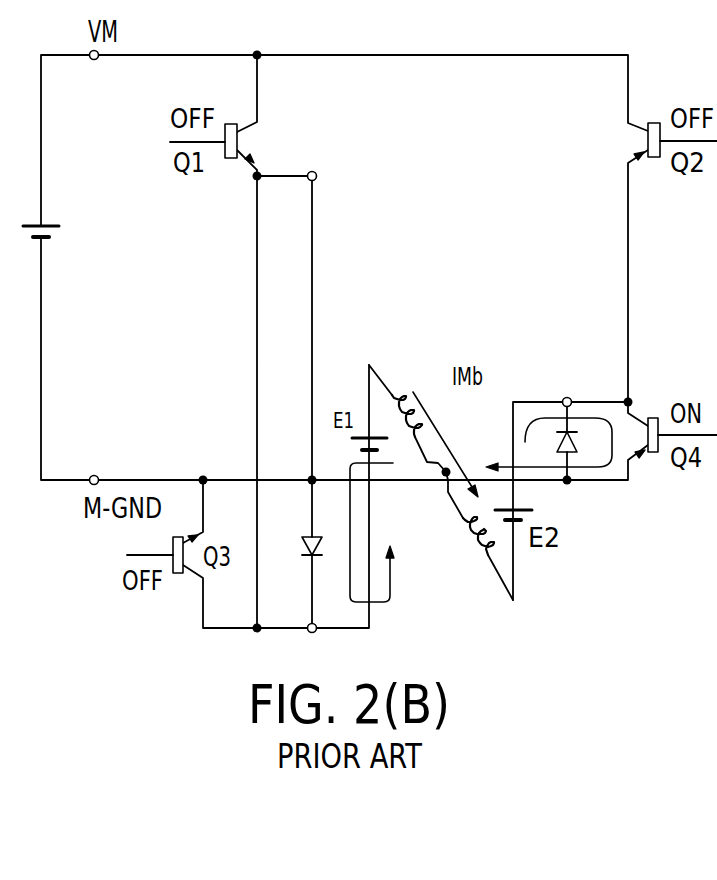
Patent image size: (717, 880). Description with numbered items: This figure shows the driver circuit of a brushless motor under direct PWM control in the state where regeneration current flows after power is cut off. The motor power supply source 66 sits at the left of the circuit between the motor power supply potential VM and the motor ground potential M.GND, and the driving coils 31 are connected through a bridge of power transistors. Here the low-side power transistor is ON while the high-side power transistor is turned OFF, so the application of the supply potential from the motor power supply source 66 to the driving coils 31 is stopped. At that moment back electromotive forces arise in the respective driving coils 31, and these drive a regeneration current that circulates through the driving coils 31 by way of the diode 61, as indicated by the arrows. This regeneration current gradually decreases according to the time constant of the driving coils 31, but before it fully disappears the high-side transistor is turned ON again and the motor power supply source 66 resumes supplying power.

The motor power supply source 66 is at (60, 230).
The diode 61 is at (303, 542).
The driving coils 31 is at (446, 578).